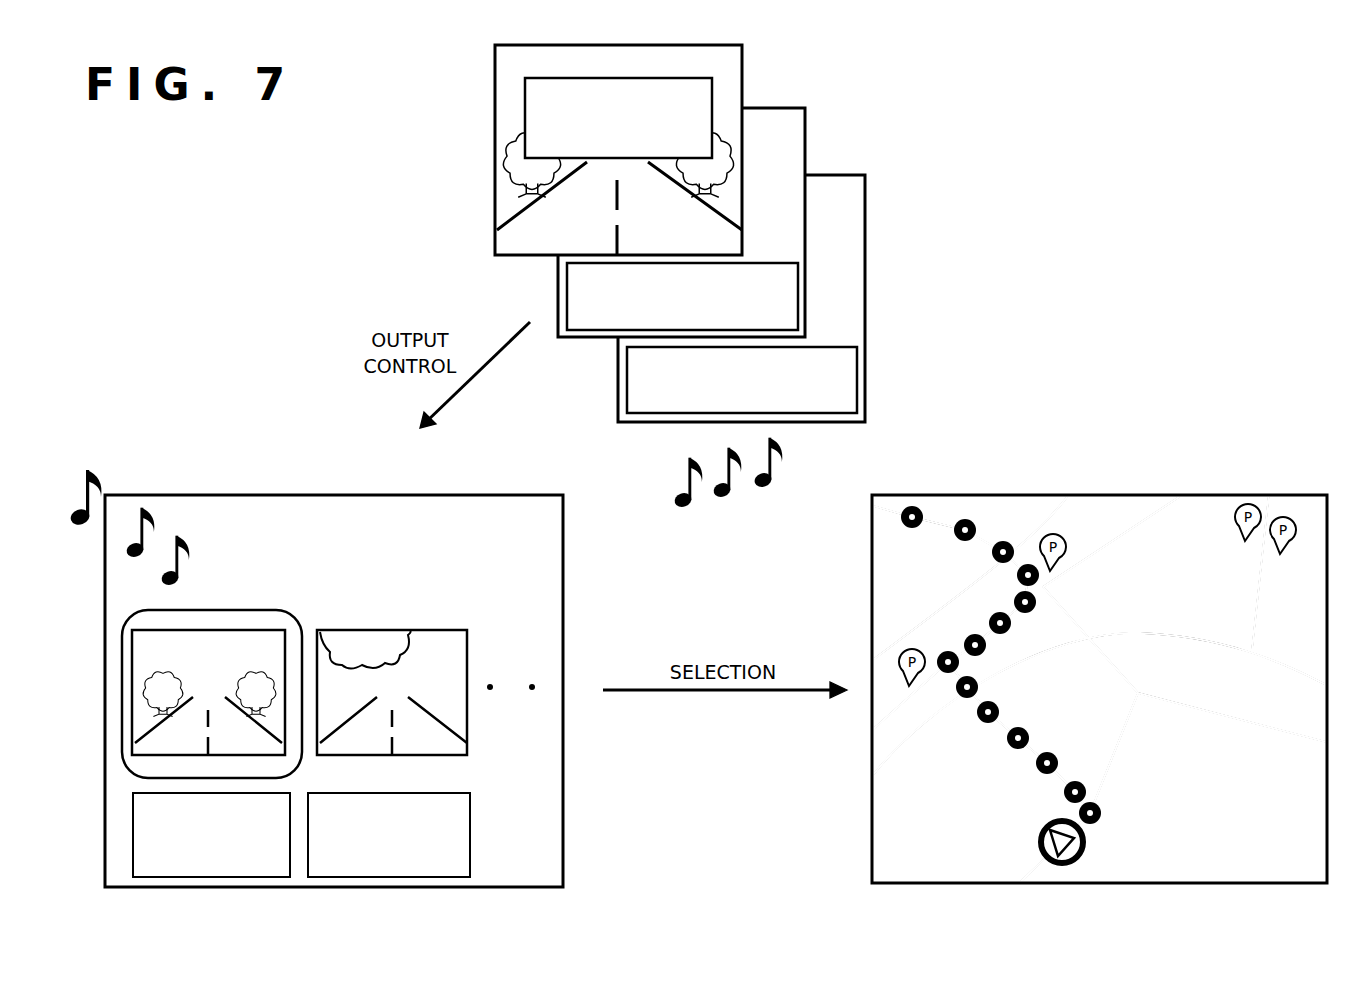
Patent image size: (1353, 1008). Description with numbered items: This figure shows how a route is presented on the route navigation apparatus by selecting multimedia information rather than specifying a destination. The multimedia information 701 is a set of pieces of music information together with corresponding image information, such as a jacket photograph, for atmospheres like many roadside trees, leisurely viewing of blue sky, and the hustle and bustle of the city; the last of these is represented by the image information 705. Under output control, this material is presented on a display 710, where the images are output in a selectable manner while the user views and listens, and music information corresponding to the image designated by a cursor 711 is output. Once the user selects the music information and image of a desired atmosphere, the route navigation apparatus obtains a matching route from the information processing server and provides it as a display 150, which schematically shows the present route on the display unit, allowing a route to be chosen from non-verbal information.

The display 150 is at (1204, 494).
The multimedia information 701 is at (752, 239).
The image information 705 is at (866, 216).
The display 710 is at (566, 533).
The cursor 711 is at (190, 611).